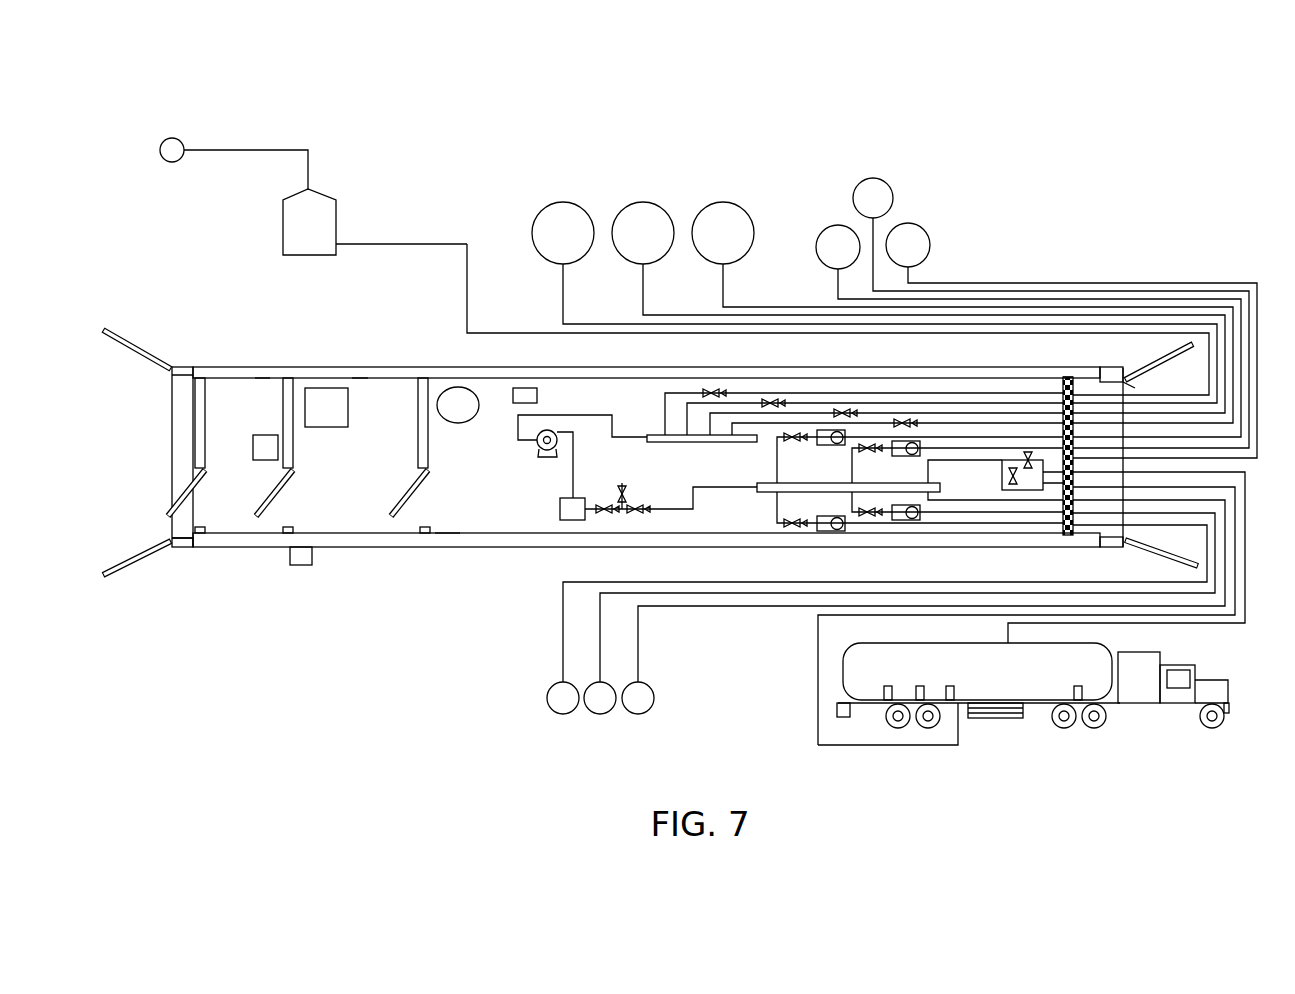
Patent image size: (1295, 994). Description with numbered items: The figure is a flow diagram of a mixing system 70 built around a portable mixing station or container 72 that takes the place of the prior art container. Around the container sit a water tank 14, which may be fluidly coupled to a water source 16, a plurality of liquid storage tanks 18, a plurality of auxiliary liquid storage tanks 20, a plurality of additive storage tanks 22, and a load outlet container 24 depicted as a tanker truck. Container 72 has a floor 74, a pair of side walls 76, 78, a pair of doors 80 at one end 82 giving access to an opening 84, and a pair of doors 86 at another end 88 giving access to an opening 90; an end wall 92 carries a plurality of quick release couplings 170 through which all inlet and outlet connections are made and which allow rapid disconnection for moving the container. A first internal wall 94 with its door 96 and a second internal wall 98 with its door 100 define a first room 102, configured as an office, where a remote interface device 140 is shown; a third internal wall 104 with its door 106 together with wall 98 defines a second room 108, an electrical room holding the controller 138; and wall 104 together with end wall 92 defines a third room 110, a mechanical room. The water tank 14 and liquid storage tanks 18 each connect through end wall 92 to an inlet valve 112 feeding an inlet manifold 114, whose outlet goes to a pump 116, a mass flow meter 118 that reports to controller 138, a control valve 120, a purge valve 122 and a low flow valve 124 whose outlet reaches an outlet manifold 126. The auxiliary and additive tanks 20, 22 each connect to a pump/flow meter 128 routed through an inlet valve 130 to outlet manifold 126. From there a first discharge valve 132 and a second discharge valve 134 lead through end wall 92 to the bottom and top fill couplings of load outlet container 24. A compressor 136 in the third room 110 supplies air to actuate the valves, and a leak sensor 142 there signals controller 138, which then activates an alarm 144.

The mixing system 70 is at (186, 91).
The water source 16 is at (169, 163).
The water tank 14 is at (336, 203).
The liquid storage tanks 18 is at (604, 175).
The auxiliary liquid storage tanks 20 is at (824, 175).
The additive storage tanks 22 is at (538, 704).
The load outlet container 24 is at (1036, 740).
The portable mixing station or container 72 is at (374, 640).
The floor 74 is at (220, 537).
The side wall 76 is at (487, 548).
The side wall 78 is at (405, 367).
The doors 80 is at (160, 548).
The end 82 is at (194, 557).
The opening 84 is at (183, 415).
The doors 86 is at (1178, 345).
The end 88 is at (1141, 553).
The opening 90 is at (1135, 388).
The end wall 92 is at (1069, 370).
The first internal wall 94 is at (195, 450).
The door 96 is at (180, 500).
The second internal wall 98 is at (283, 420).
The door 100 is at (277, 494).
The first room 102 is at (261, 385).
The third internal wall 104 is at (418, 420).
The door 106 is at (395, 516).
The second room 108 is at (359, 392).
The third room 110 is at (445, 532).
The inlet valve 112 is at (708, 390).
The inlet manifold 114 is at (650, 435).
The pump 116 is at (536, 444).
The mass flow meter 118 is at (560, 510).
The control valve 120 is at (603, 503).
The purge valve 122 is at (627, 487).
The low flow valve 124 is at (638, 514).
The outlet manifold 126 is at (760, 483).
The pump/flow meter 128 is at (828, 428).
The inlet valve 130 is at (790, 433).
The first discharge valve 132 is at (1010, 486).
The second discharge valve 134 is at (1015, 460).
The compressor 136 is at (448, 389).
The controller 138 is at (320, 428).
The remote interface device 140 is at (262, 460).
The leak sensor 142 is at (522, 388).
The alarm 144 is at (303, 566).
The quick release couplings 170 is at (1062, 390).